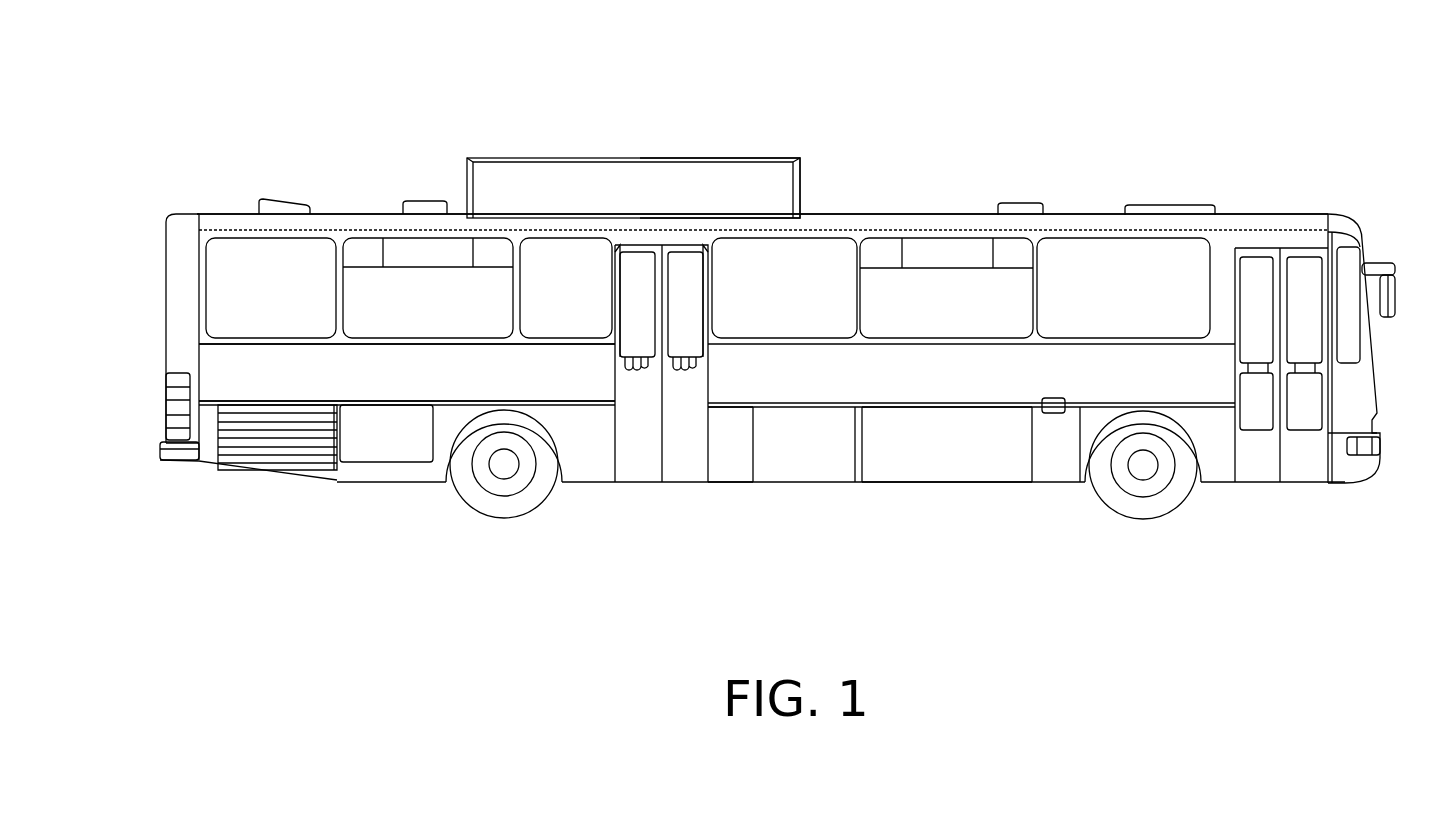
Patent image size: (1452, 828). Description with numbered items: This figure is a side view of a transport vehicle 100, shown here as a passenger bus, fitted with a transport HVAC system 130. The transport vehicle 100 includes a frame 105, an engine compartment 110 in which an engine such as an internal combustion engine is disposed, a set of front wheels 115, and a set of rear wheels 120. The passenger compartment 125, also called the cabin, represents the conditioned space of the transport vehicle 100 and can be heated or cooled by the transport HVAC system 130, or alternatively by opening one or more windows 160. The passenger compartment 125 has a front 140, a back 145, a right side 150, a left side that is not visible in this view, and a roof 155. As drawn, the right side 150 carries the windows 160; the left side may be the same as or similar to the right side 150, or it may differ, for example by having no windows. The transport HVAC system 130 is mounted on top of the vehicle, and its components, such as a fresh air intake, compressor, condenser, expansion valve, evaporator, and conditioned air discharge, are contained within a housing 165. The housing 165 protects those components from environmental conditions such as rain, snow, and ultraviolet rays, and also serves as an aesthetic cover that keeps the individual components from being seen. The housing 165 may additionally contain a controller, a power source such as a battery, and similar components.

The transport vehicle 100 is at (1247, 82).
The frame 105 is at (985, 482).
The engine compartment 110 is at (303, 444).
The front wheels 115 is at (1152, 508).
The rear wheels 120 is at (513, 505).
The passenger compartment 125 is at (921, 380).
The transport HVAC system 130 is at (527, 178).
The front 140 is at (1381, 391).
The back 145 is at (167, 320).
The right side 150 is at (288, 373).
The roof 155 is at (1087, 212).
The windows 160 is at (298, 292).
The housing 165 is at (691, 157).